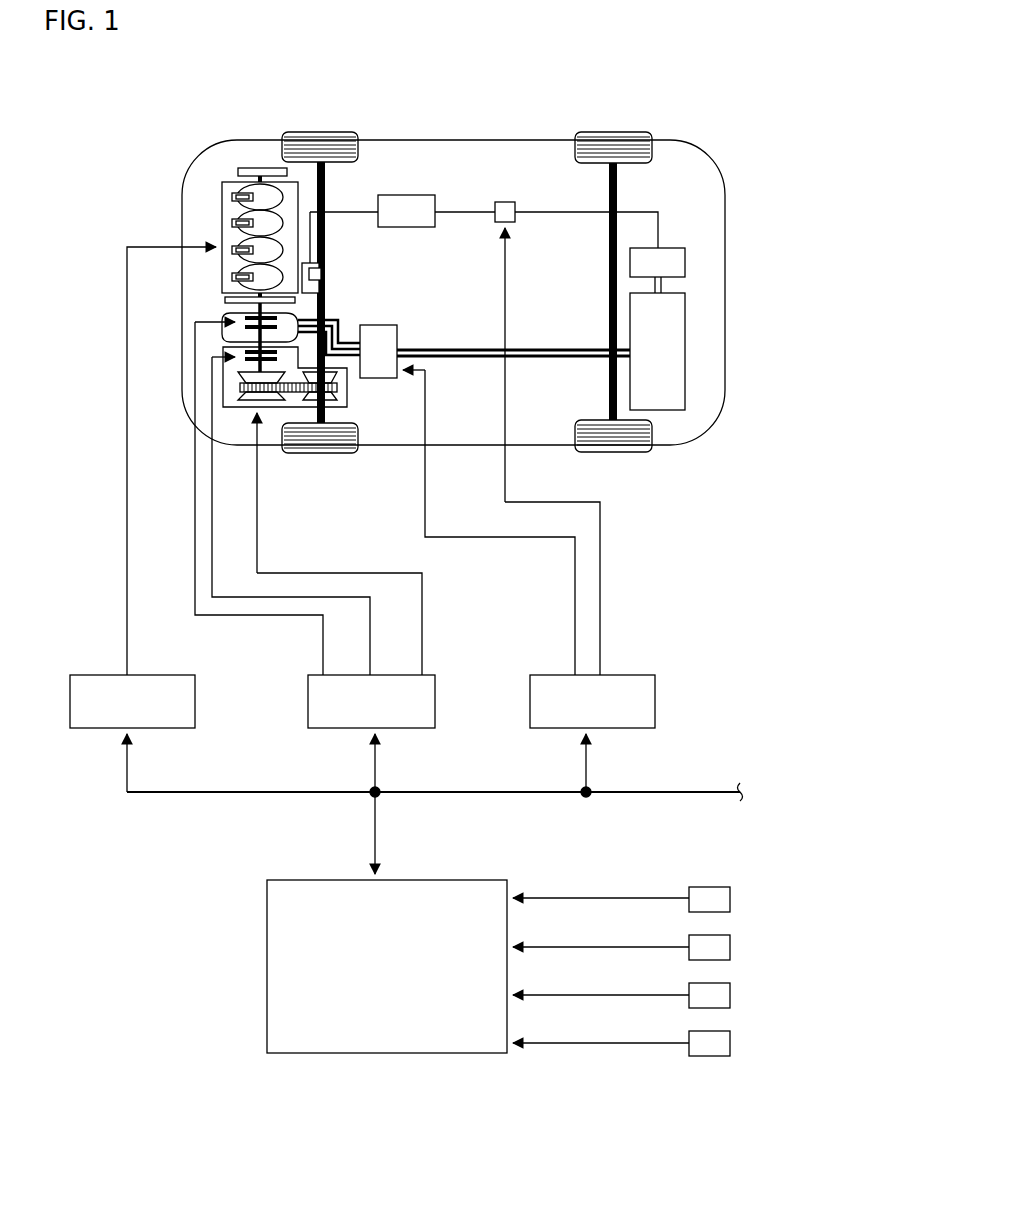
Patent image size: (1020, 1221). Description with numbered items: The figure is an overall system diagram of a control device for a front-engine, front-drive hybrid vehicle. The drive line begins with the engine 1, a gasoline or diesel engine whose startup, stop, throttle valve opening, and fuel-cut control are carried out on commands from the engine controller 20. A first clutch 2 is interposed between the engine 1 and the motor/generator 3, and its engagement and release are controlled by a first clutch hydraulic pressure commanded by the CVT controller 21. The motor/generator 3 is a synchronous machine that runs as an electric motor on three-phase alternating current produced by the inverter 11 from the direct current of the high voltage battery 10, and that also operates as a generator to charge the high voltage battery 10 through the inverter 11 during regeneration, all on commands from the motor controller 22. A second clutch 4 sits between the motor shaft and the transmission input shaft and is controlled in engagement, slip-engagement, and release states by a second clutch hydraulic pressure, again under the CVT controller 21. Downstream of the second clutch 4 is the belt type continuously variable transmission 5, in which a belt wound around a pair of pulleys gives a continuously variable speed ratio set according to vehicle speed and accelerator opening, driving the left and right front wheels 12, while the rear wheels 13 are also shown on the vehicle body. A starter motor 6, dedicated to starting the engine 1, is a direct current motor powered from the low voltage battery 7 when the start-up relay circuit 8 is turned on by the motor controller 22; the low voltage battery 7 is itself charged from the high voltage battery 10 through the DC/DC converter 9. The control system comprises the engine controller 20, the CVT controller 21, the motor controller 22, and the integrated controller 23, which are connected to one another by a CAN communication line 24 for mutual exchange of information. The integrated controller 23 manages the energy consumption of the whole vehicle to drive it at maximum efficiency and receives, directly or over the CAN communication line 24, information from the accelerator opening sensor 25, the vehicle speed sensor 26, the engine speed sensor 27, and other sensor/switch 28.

The engine 1 is at (222, 207).
The first clutch 2 is at (225, 338).
The motor/generator 3 is at (228, 310).
The second clutch 4 is at (228, 372).
The belt type continuously variable transmission 5 is at (225, 385).
The starter motor 6 is at (318, 262).
The low voltage battery 7 is at (403, 195).
The start-up relay circuit 8 is at (506, 202).
The DC/DC converter 9 is at (685, 260).
The high voltage battery 10 is at (685, 312).
The inverter 11 is at (395, 325).
The front wheel 12 is at (325, 132).
The rear wheel 13 is at (616, 132).
The engine controller 20 is at (173, 675).
The CVT controller 21 is at (435, 675).
The motor controller 22 is at (639, 675).
The integrated controller 23 is at (485, 880).
The CAN communication line 24 is at (508, 790).
The accelerator opening sensor 25 is at (730, 895).
The vehicle speed sensor 26 is at (730, 943).
The engine speed sensor 27 is at (730, 991).
The other sensor/switch 28 is at (730, 1039).